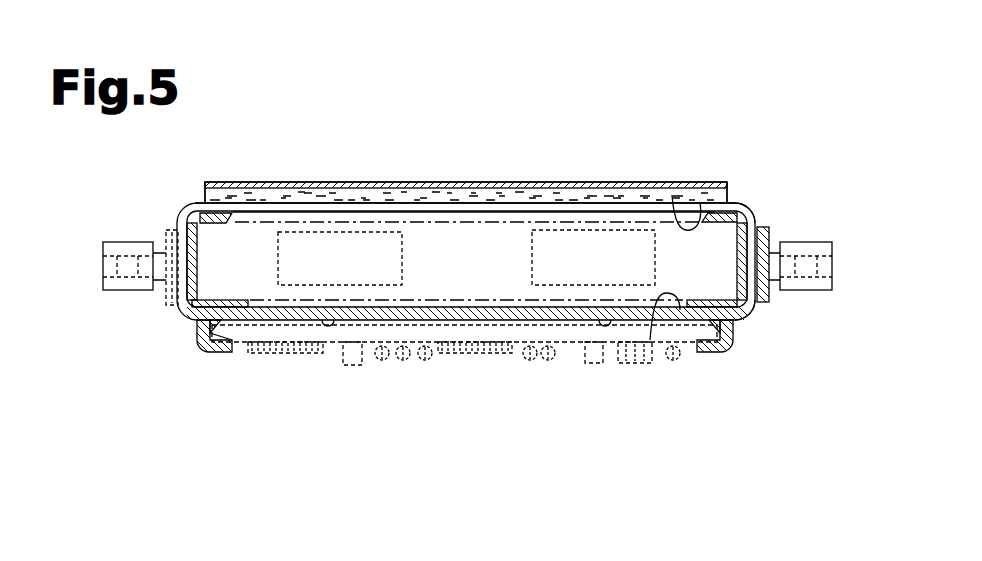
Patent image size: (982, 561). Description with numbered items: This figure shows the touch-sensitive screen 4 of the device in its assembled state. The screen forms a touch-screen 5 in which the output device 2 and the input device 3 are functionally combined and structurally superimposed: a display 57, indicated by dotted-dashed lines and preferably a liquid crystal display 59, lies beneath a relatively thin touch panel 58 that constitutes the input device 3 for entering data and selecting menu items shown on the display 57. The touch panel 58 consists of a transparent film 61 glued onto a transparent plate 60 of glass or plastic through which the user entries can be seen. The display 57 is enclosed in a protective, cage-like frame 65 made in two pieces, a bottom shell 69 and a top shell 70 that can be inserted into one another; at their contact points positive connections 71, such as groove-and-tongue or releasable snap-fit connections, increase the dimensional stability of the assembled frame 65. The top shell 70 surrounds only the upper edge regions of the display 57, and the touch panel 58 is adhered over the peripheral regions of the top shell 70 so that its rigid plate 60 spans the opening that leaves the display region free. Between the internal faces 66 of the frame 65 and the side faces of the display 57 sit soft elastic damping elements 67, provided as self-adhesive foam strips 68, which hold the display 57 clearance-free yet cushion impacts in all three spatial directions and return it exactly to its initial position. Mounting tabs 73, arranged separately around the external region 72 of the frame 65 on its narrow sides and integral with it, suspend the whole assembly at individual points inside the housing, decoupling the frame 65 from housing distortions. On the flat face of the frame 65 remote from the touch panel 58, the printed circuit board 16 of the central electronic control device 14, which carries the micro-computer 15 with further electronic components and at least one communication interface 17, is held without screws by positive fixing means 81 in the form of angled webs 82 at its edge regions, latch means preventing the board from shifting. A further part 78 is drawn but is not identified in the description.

The output device 2 is at (494, 145).
The input device 3 is at (534, 140).
The touch-sensitive screen 4 is at (728, 108).
The touch-screen 5 is at (733, 157).
The central electronic control device 14 is at (330, 372).
The micro-computer 15 is at (440, 356).
The printed circuit board 16 is at (572, 323).
The communication interface 17 is at (615, 365).
The display 57 is at (422, 220).
The touch panel 58 is at (200, 192).
The liquid crystal display 59 is at (440, 250).
The transparent plate 60 is at (300, 200).
The transparent film 61 is at (348, 185).
The frame 65 is at (755, 217).
The internal faces 66 is at (688, 208).
The soft elastic damping elements 67 is at (216, 212).
The soft elastic foam strips 68 is at (222, 322).
The bottom shell 69 is at (763, 313).
The top shell 70 is at (752, 193).
The positive connections 71 is at (166, 236).
The external region 72 is at (767, 226).
The mounting tabs 73 is at (93, 251).
The contact loop 78 is at (672, 196).
The positive fixing means 81 is at (197, 357).
The angled webs 82 is at (204, 352).